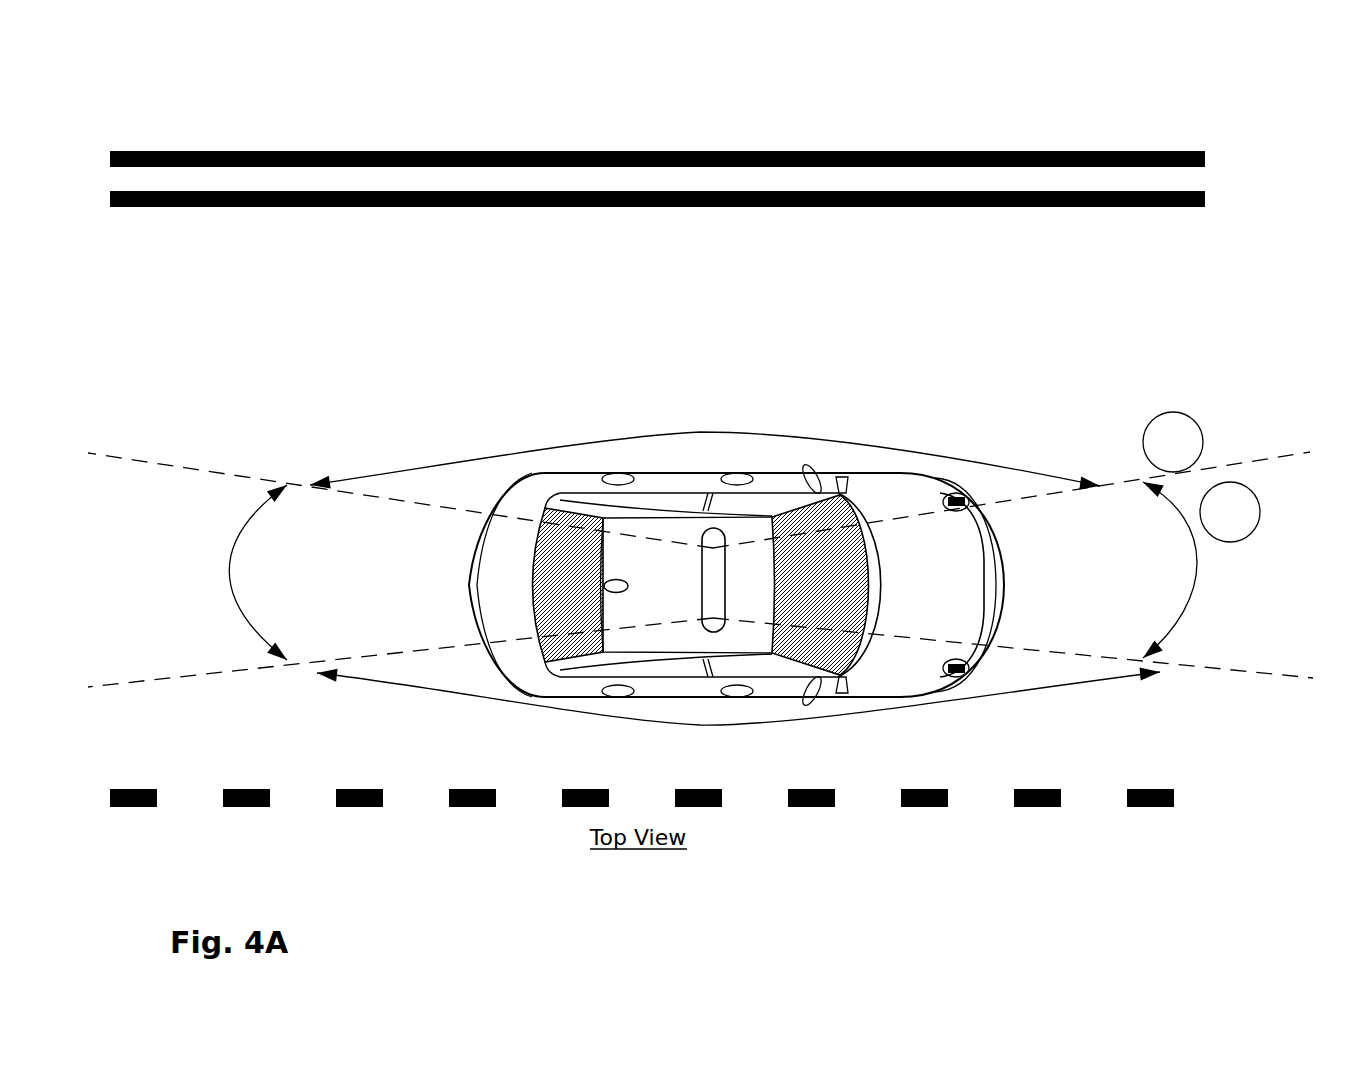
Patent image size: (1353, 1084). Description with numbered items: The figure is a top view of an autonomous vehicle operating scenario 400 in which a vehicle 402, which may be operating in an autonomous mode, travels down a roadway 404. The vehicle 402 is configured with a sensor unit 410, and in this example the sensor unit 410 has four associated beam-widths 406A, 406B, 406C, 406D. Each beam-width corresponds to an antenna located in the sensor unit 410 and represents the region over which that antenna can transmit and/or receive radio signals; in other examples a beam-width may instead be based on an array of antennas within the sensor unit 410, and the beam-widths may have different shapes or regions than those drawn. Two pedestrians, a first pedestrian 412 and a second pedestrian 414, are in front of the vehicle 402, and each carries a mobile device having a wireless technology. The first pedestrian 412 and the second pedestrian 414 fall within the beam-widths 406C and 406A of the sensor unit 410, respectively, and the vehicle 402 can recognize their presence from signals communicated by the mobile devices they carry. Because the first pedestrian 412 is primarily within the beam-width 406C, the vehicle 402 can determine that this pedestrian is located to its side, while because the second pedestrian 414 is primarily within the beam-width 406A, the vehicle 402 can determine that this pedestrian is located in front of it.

The scenario 400 is at (657, 424).
The vehicle 402 is at (913, 473).
The roadway 404 is at (565, 218).
The beam-width 406A is at (1013, 565).
The beam-width 406B is at (400, 570).
The beam-width 406C is at (705, 450).
The beam-width 406D is at (738, 713).
The sensor unit 410 is at (710, 560).
The first pedestrian 412 is at (1185, 414).
The second pedestrian 414 is at (1243, 484).